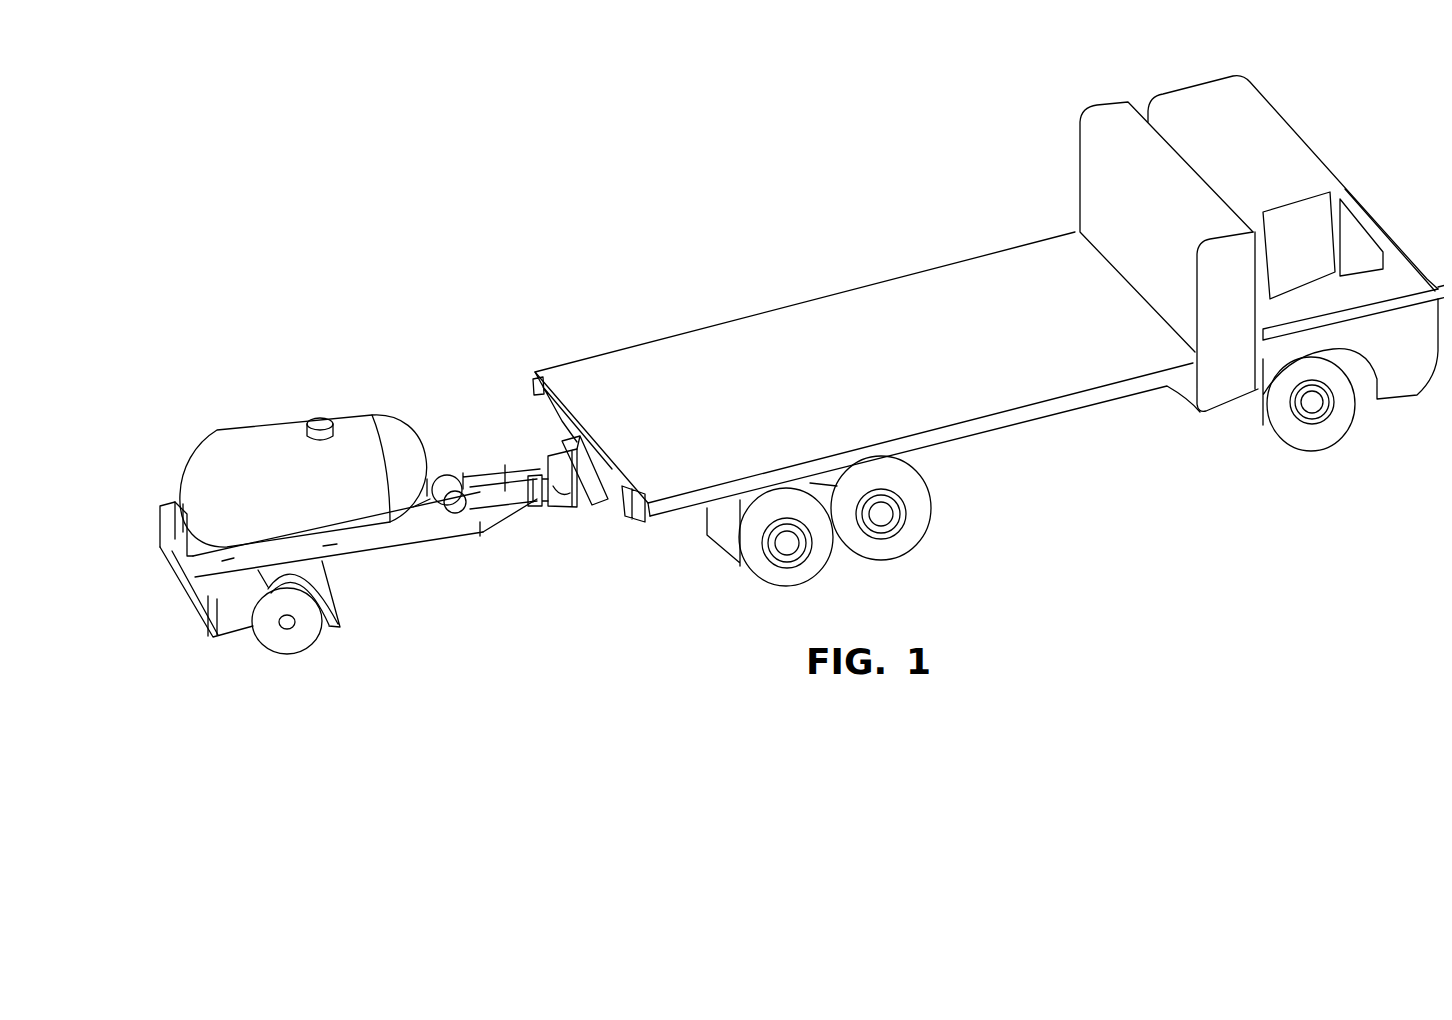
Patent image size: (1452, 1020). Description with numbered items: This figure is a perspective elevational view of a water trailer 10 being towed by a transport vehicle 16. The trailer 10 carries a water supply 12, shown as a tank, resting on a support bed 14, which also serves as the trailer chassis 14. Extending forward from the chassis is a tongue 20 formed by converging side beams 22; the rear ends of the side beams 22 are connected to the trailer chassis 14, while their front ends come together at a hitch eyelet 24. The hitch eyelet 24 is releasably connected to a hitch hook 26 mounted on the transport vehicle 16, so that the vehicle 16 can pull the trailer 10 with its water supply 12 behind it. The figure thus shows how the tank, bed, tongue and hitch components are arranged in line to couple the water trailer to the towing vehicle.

The water trailer 10 is at (260, 291).
The water supply 12 is at (257, 446).
The support bed 14 is at (372, 551).
The transport vehicle 16 is at (988, 416).
The tongue 20 is at (470, 521).
The converging side beams 22 is at (510, 499).
The hitch eyelet 24 is at (537, 466).
The hitch hook 26 is at (540, 471).